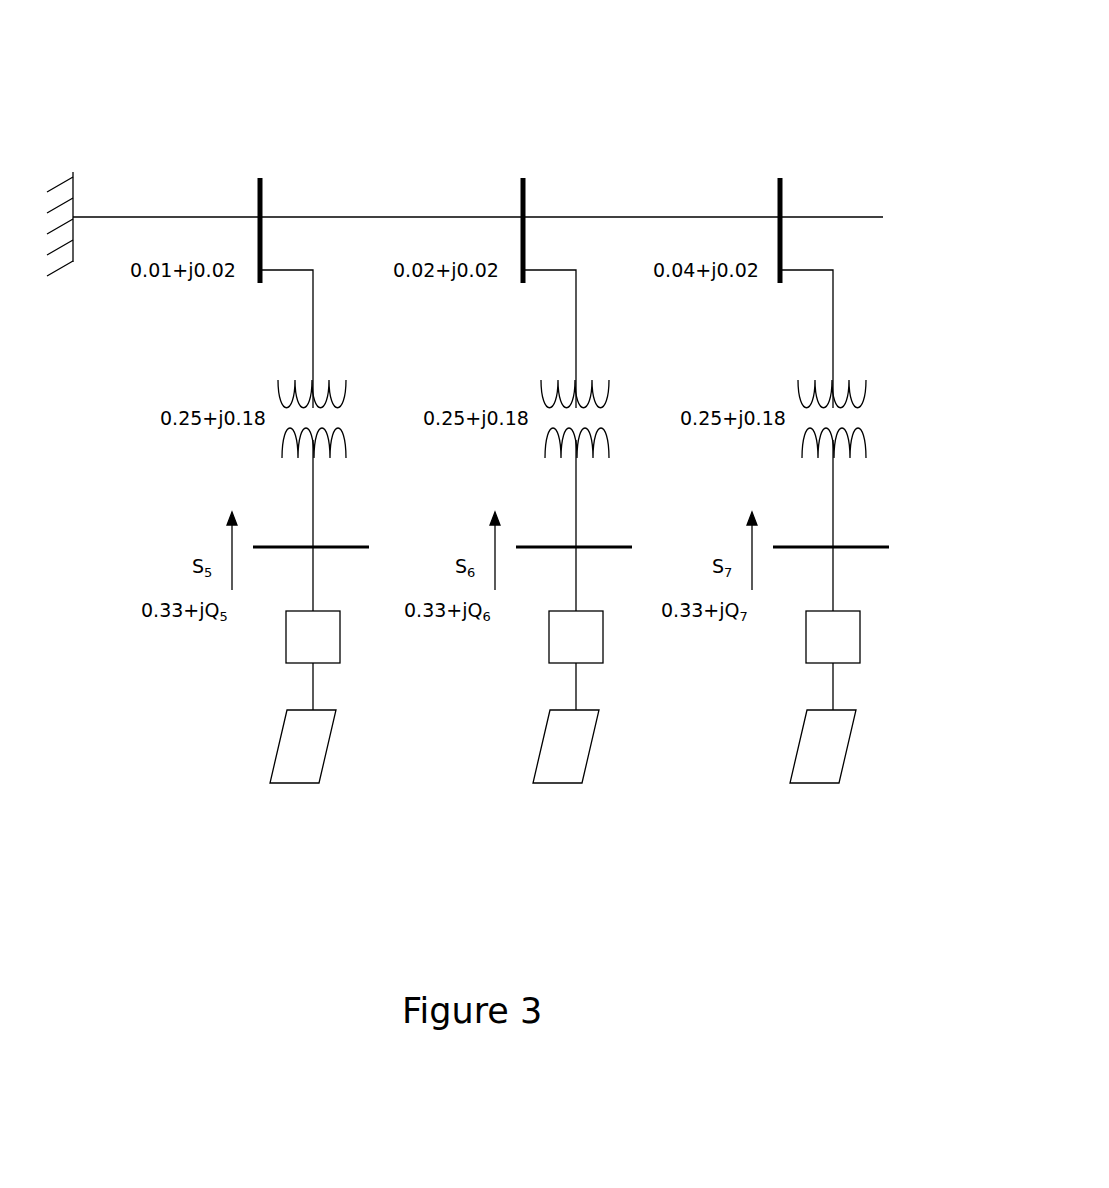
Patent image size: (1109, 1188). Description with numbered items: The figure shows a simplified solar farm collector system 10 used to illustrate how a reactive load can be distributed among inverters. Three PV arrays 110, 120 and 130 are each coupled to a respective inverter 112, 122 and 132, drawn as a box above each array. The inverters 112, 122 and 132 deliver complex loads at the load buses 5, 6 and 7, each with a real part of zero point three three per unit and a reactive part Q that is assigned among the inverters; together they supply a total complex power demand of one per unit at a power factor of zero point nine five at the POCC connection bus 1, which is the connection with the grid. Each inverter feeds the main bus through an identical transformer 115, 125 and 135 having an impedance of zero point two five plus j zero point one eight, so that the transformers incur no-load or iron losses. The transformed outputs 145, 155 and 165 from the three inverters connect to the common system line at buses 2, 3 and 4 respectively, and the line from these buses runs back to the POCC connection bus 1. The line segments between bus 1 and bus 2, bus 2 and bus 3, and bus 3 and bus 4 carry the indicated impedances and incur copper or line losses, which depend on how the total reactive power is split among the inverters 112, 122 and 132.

The solar farm system 10 is at (713, 86).
The POCC connection bus 1 is at (73, 172).
The bus 2 is at (262, 186).
The bus 3 is at (525, 186).
The bus 4 is at (782, 186).
The load bus 5 is at (353, 546).
The load bus 6 is at (577, 513).
The load bus 7 is at (834, 513).
The transformed output 145 is at (313, 346).
The transformed output 155 is at (536, 339).
The transformed output 165 is at (793, 339).
The transformer 115 is at (360, 402).
The transformer 125 is at (611, 401).
The transformer 135 is at (868, 401).
The inverter 112 is at (286, 660).
The inverter 122 is at (532, 657).
The inverter 132 is at (789, 657).
The PV array 110 is at (330, 740).
The PV array 120 is at (602, 746).
The PV array 130 is at (859, 746).